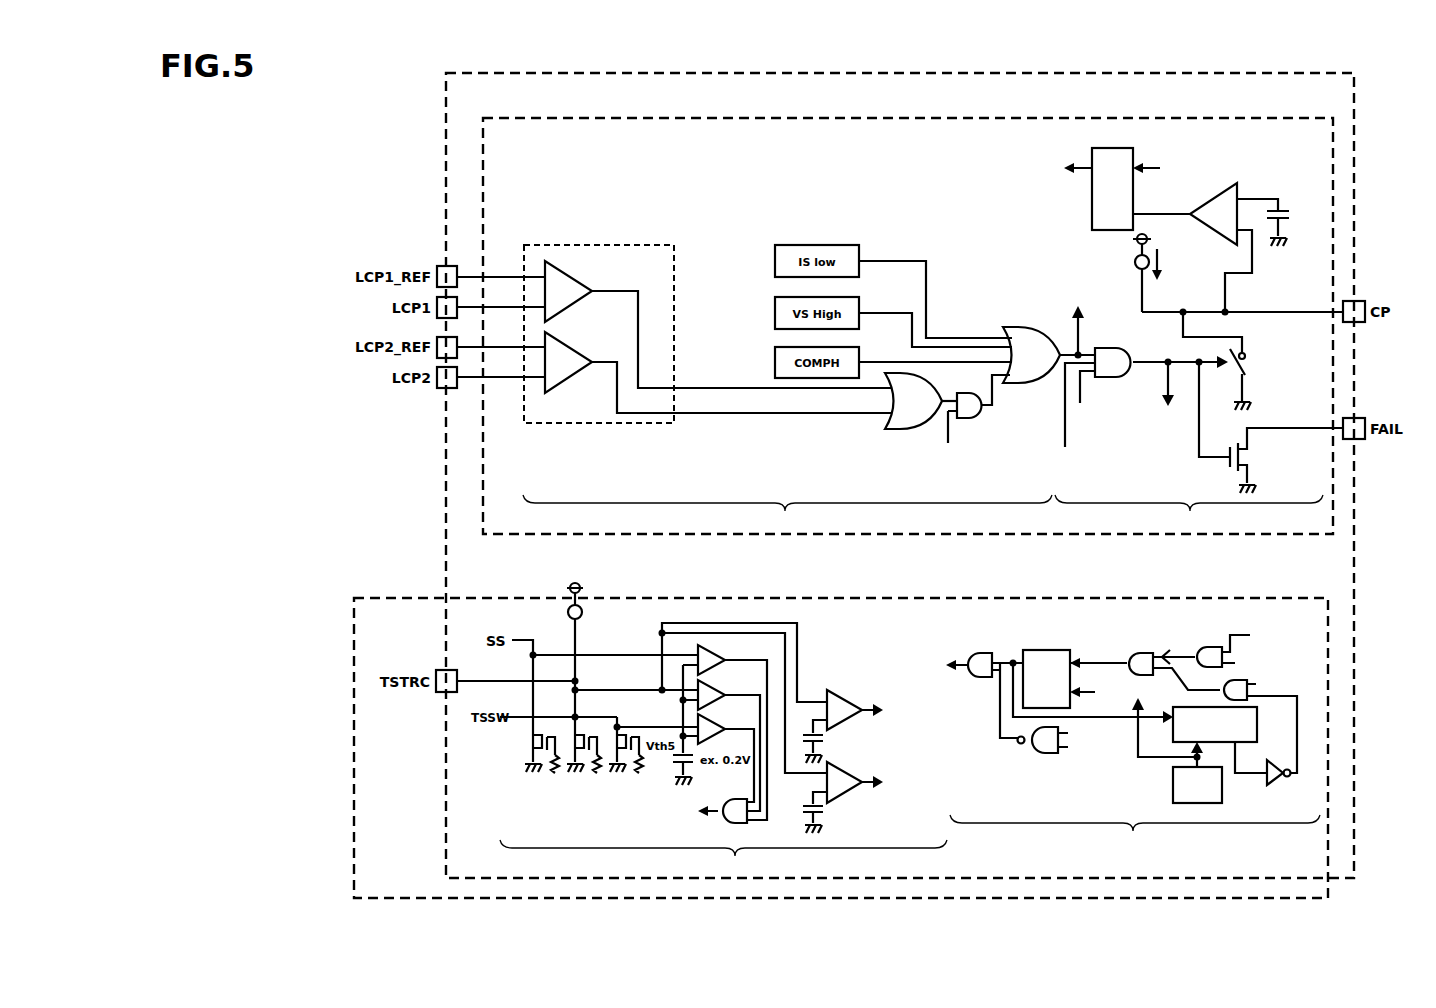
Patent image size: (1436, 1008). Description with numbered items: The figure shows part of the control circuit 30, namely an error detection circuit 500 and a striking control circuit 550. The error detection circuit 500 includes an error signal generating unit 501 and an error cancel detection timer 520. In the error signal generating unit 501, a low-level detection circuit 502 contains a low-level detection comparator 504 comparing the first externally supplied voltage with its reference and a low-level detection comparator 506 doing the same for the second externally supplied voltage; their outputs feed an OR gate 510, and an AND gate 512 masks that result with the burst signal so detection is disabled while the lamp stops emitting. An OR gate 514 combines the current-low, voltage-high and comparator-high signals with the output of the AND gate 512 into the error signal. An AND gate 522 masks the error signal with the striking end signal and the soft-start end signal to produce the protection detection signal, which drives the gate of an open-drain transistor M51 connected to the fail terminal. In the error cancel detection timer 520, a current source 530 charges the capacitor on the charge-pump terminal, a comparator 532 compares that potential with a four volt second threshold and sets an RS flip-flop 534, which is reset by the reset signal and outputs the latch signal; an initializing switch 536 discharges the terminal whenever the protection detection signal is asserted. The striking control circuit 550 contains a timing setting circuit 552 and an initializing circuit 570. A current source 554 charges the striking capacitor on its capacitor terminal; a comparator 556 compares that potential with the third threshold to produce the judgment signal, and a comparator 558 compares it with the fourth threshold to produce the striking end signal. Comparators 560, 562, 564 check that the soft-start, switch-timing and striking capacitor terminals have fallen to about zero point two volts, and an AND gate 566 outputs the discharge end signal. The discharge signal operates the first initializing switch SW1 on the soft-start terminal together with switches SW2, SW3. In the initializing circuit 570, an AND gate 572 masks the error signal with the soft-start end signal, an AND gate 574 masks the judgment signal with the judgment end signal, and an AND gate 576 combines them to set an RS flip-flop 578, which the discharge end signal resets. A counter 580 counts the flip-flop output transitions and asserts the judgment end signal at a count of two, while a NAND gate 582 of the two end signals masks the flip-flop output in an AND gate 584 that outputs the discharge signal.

The control circuit 30 is at (414, 107).
The error detection circuit 500 is at (908, 118).
The error signal generating unit 501 is at (787, 513).
The low-level detection circuit 502 is at (605, 245).
The low-level detection comparator 504 is at (575, 270).
The low-level detection comparator 506 is at (575, 341).
The OR gate 510 is at (915, 429).
The AND gate 512 is at (970, 419).
The OR gate 514 is at (1032, 328).
The error cancel detection timer 520 is at (1189, 513).
The AND gate 522 is at (1117, 347).
The current source 530 is at (1136, 262).
The CP-terminal comparator 532 is at (1213, 184).
The RS flip-flop 534 is at (1092, 200).
The initializing switch 536 is at (1252, 360).
The transistor M51 is at (1255, 457).
The striking control circuit 550 is at (683, 598).
The timing setting circuit 552 is at (723, 857).
The current source 554 is at (582, 614).
The comparator 556 is at (855, 770).
The comparator 558 is at (845, 696).
The comparator 560 is at (712, 650).
The comparator 562 is at (712, 685).
The comparator 564 is at (712, 719).
The AND gate 566 is at (735, 800).
The first initializing switch SW1 is at (527, 748).
The initializing switch SW2 is at (569, 748).
The initializing switch SW3 is at (612, 748).
The initializing circuit 570 is at (1135, 833).
The AND gate 572 is at (1205, 648).
The AND gate 574 is at (1245, 678).
The AND gate 576 is at (1152, 648).
The RS flip-flop 578 is at (1045, 650).
The counter 580 is at (1257, 736).
The NAND gate 582 is at (1043, 754).
The AND gate 584 is at (975, 652).